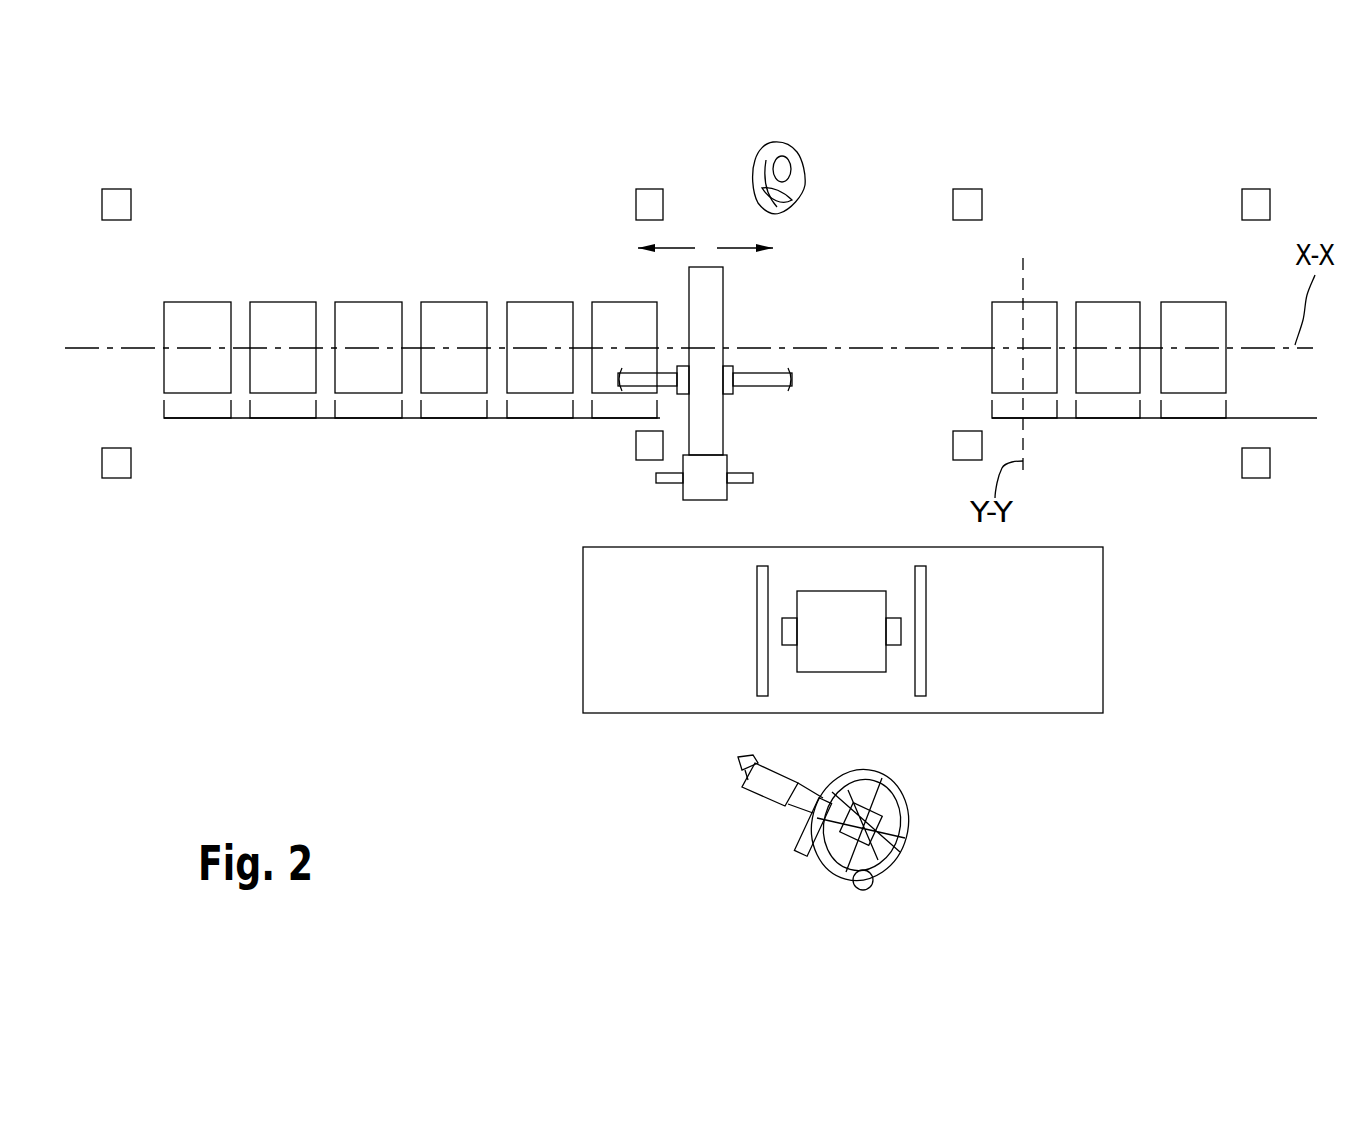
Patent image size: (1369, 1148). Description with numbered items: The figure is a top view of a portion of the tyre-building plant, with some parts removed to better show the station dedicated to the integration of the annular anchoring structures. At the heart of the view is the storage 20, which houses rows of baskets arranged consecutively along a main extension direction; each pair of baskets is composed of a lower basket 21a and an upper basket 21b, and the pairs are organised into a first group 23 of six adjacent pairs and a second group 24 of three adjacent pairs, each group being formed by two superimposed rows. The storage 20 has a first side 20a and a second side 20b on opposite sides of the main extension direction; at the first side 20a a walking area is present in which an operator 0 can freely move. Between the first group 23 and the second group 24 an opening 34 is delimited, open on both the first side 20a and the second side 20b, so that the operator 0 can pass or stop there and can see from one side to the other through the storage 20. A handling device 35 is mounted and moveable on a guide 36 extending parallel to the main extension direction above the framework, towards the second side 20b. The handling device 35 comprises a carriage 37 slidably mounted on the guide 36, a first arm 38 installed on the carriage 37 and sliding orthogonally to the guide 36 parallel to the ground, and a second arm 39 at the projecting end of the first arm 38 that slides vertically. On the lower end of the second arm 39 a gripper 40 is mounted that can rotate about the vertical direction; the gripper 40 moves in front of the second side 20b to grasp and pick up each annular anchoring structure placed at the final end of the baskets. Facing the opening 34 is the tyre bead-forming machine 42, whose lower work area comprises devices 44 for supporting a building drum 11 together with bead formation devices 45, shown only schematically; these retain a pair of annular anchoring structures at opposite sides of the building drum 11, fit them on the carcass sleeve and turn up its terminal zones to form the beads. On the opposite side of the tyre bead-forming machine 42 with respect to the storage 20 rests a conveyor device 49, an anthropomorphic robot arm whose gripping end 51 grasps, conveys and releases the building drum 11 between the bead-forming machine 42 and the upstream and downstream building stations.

The operator 0 is at (795, 142).
The building drum 11 is at (864, 655).
The storage 20 is at (1257, 378).
The first side 20a is at (1022, 217).
The second side 20b is at (558, 503).
The lower basket 21a is at (283, 430).
The upper basket 21b is at (274, 295).
The first group 23 is at (326, 245).
The second group 24 is at (1080, 220).
The opening 34 is at (836, 318).
The handling device 35 is at (737, 422).
The guide 36 is at (637, 370).
The carriage 37 is at (725, 368).
The first arm 38 is at (704, 283).
The second arm 39 is at (700, 500).
The gripper 40 is at (745, 478).
The tyre bead-forming machine 42 is at (933, 742).
The devices for supporting a building drum 44 is at (792, 628).
The bead formation devices 45 is at (928, 657).
The conveyor device 49 is at (775, 840).
The gripping end 51 is at (745, 764).